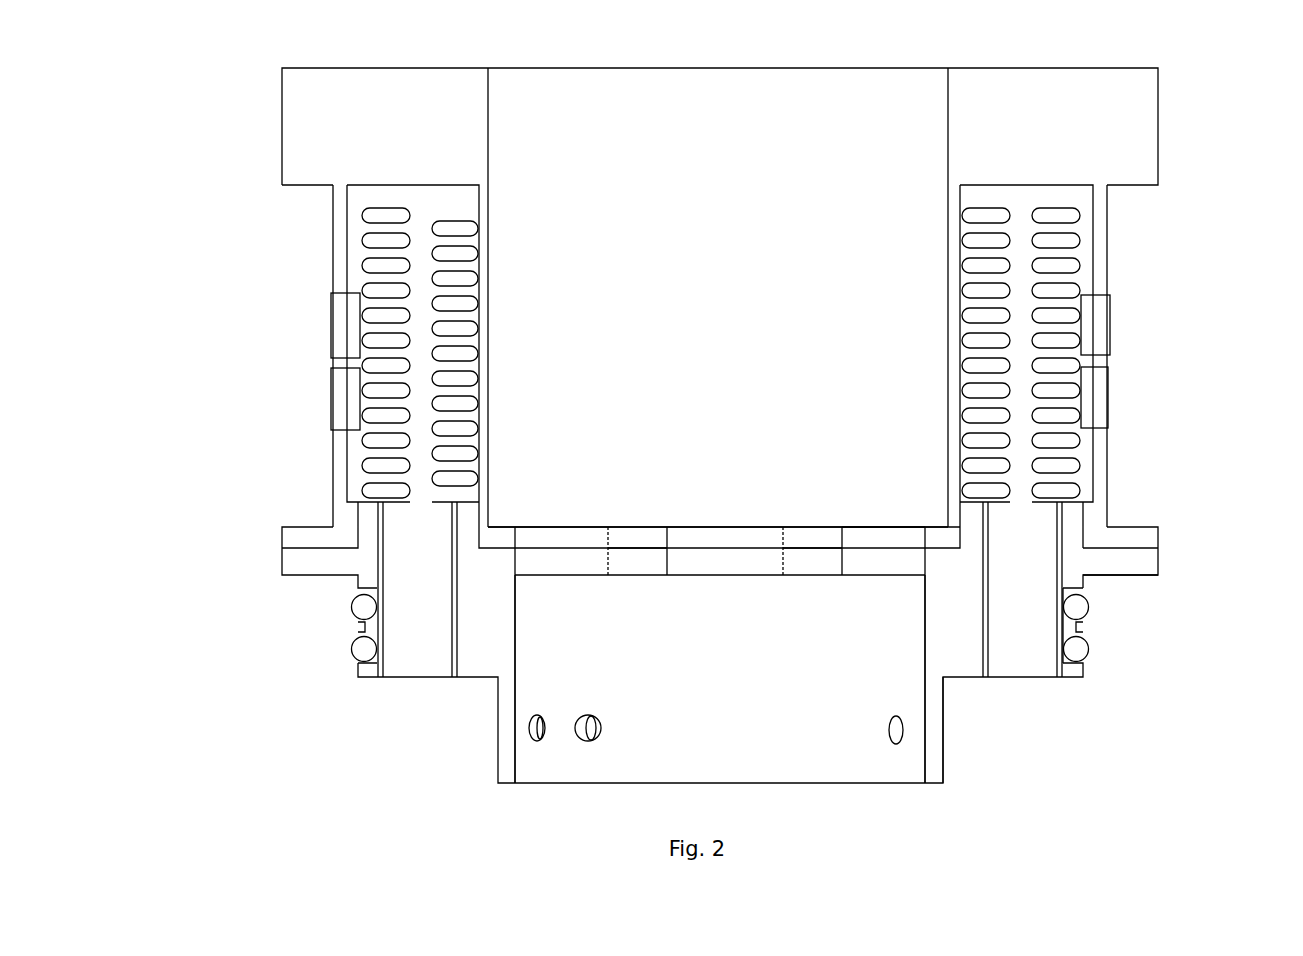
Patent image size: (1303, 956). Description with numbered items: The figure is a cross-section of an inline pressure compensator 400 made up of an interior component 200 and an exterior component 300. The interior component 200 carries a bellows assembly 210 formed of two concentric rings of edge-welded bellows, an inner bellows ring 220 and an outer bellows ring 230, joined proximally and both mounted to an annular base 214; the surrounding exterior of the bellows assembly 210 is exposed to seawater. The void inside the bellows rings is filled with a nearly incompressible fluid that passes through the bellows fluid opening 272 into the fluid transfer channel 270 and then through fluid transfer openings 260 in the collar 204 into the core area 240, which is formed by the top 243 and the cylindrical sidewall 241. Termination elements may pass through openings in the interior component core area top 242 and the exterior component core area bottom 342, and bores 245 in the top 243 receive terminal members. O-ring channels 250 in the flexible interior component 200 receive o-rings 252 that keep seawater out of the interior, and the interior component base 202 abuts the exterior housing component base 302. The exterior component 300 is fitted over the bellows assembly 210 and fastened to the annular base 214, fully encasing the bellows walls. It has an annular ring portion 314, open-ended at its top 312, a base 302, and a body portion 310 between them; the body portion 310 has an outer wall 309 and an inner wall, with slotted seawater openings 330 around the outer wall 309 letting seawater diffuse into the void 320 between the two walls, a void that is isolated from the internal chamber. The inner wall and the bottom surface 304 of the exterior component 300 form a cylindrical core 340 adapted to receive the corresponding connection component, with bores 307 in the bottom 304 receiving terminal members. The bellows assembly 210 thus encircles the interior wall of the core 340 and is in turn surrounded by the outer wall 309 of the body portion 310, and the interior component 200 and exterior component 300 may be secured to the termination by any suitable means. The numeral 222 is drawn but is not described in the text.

The interior component 200 is at (1098, 768).
The interior component base 202 is at (1122, 560).
The collar 204 is at (935, 733).
The bellows assembly 210 is at (1097, 327).
The annular base 214 is at (1072, 521).
The inner bellows ring 220 is at (1020, 228).
The stator frame wall 222 is at (1017, 298).
The outer bellows ring 230 is at (1060, 291).
The core area 240 is at (677, 657).
The cylindrical sidewall 241 is at (515, 647).
The interior component core area top 242 is at (873, 575).
The top 243 is at (595, 575).
The bores 245 is at (820, 575).
The o-ring channels 250 is at (1078, 668).
The o-rings 252 is at (1085, 607).
The fluid transfer openings 260 is at (550, 752).
The fluid transfer channel 270 is at (1017, 632).
The bellows fluid opening 272 is at (1025, 505).
The exterior component 300 is at (298, 488).
The exterior housing component base 302 is at (295, 540).
The bottom surface 304 is at (897, 527).
The bores 307 is at (638, 527).
The body outer wall 309 is at (333, 222).
The body portion 310 is at (333, 262).
The top 312 is at (360, 70).
The annular ring portion 314 is at (430, 135).
The void 320 is at (355, 328).
The seawater openings 330 is at (345, 435).
The core 340 is at (677, 309).
The exterior component core area bottom 342 is at (580, 526).
The inline pressure compensator 400 is at (1163, 415).